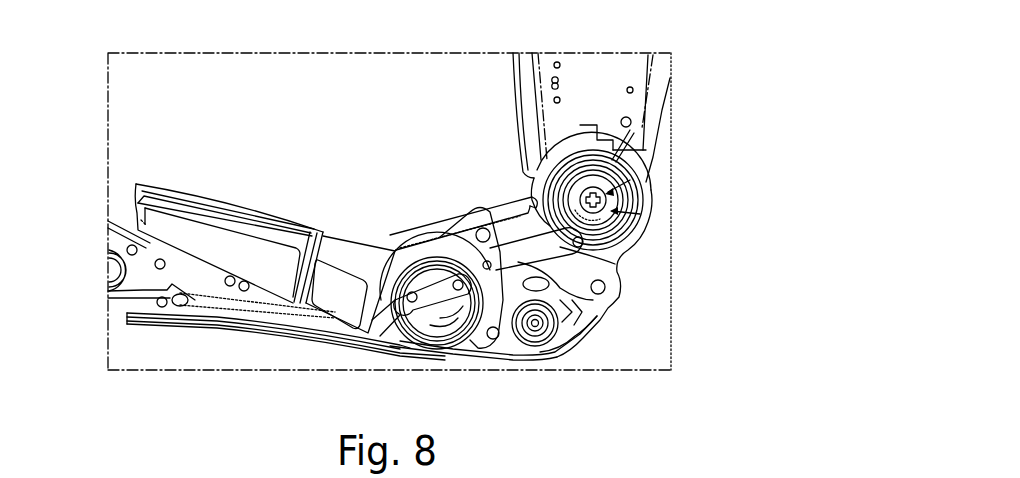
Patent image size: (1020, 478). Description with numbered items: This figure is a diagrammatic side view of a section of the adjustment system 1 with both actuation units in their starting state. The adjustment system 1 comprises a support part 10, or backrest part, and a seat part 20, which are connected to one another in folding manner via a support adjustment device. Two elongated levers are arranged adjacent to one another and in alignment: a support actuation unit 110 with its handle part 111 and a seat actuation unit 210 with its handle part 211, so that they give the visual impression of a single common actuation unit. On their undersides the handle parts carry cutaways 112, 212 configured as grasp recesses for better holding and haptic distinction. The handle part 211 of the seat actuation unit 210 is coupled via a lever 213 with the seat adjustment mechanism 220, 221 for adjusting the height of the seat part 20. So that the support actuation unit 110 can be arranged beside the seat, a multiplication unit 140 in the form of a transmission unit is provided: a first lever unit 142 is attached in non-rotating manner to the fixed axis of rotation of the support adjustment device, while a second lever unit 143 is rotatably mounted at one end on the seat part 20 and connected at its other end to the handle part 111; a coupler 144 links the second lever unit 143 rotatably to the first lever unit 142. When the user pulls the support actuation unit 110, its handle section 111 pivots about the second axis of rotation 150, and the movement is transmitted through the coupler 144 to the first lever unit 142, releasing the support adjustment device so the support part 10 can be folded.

The adjustment system 1 is at (730, 115).
The support part 10 is at (625, 70).
The seat part 20 is at (121, 309).
The support actuation unit 110 is at (352, 214).
The handle part 111 is at (319, 228).
The cutaway 112 is at (339, 303).
The multiplication unit 140 is at (618, 266).
The first lever unit 142 is at (640, 210).
The second lever unit 143 is at (427, 229).
The coupler 144 is at (597, 314).
The second axis of rotation 150 is at (630, 172).
The seat actuation unit 210 is at (229, 265).
The handle part 211 is at (147, 182).
The cutaway 212 is at (226, 270).
The lever 213 is at (408, 327).
The seat adjustment mechanism 220 is at (497, 315).
The roller of locking mechanism 221 is at (535, 323).